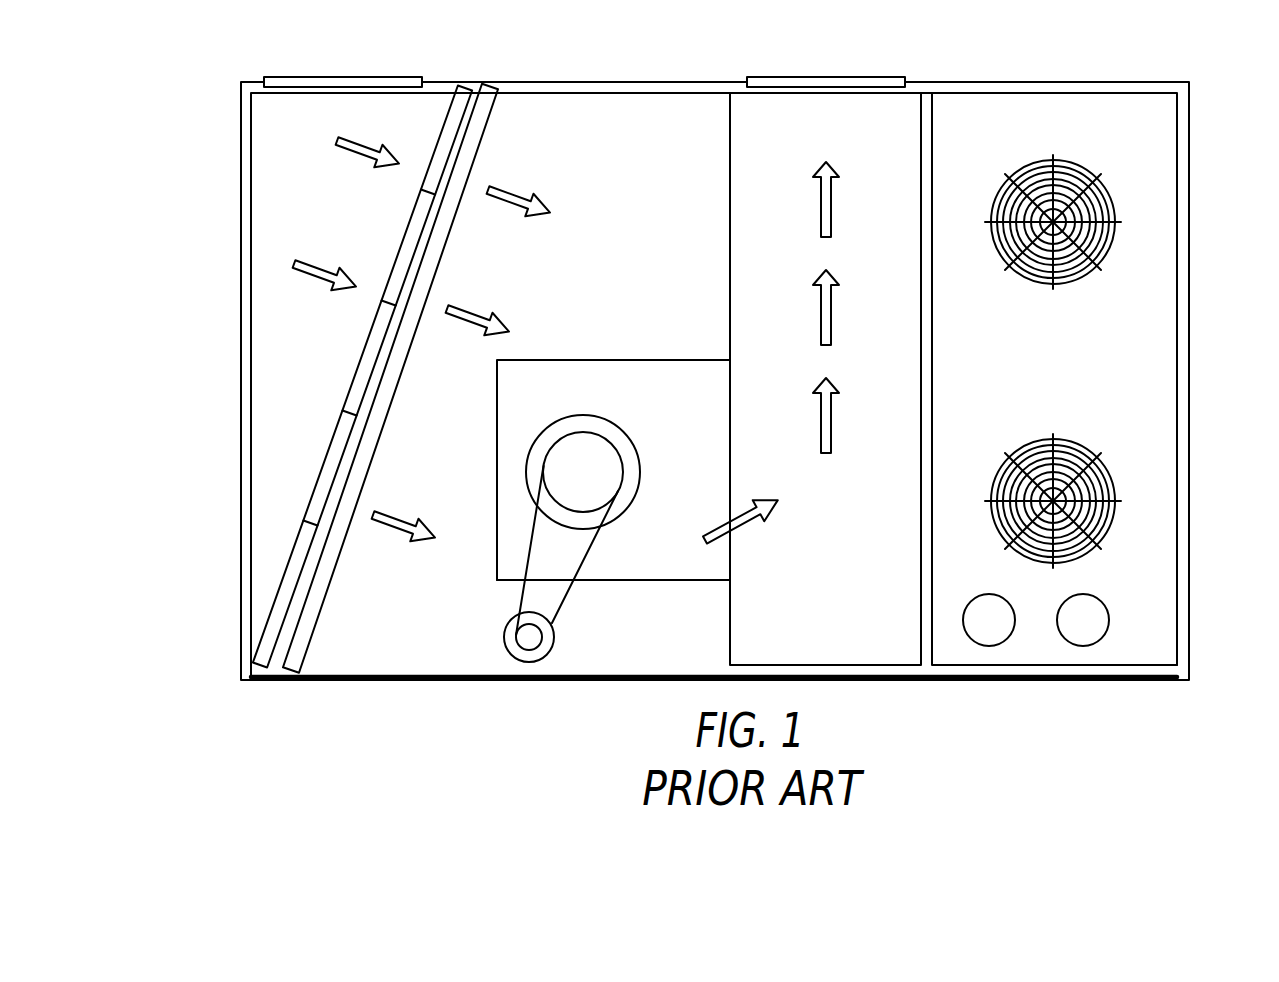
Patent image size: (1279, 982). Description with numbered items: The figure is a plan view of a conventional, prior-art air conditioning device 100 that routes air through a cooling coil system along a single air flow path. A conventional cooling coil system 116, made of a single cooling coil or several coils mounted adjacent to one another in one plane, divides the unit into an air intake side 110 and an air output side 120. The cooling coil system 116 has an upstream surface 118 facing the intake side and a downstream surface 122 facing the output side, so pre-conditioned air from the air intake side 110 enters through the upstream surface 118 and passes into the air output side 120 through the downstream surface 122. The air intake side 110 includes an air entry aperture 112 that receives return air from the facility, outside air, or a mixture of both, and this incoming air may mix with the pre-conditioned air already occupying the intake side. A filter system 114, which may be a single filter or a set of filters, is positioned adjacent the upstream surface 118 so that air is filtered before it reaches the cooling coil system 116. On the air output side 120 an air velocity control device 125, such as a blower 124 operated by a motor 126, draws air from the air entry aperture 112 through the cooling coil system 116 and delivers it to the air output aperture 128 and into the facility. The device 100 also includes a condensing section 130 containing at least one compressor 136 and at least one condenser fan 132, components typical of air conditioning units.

The conventional air conditioning device 100 is at (186, 117).
The air intake side 110 is at (262, 132).
The air entry aperture 112 is at (280, 82).
The filter system 114 is at (327, 393).
The conventional cooling coil system 116 is at (427, 382).
The upstream surface 118 is at (280, 629).
The air output side 120 is at (595, 100).
The downstream surface 122 is at (329, 638).
The blower 124 is at (538, 650).
The air velocity control device 125 is at (585, 611).
The motor 126 is at (583, 473).
The air output aperture 128 is at (810, 75).
The condensing section 130 is at (1165, 408).
The condenser fan 132 is at (1108, 522).
The compressor 136 is at (1083, 632).